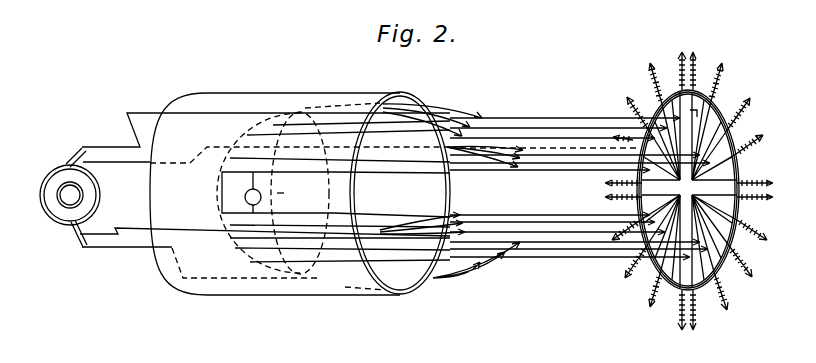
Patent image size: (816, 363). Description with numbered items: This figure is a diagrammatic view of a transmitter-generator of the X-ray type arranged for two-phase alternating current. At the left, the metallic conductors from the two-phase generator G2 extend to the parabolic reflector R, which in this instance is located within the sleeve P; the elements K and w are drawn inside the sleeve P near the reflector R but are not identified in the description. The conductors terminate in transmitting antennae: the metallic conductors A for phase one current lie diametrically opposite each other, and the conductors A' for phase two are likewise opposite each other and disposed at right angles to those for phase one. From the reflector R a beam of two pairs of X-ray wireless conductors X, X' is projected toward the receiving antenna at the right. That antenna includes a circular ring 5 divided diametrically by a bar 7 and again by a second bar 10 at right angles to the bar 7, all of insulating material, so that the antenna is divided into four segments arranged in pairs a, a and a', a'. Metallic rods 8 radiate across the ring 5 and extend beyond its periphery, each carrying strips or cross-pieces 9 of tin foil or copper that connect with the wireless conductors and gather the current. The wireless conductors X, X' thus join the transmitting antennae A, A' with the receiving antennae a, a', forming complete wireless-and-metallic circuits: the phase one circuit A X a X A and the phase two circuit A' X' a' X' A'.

The two-phase generator G2 is at (60, 195).
The sleeve P is at (240, 93).
The parabolic reflector R is at (218, 197).
The lamp holder K is at (277, 192).
The lamp filament w is at (288, 195).
The metallic conductors (transmitting antennae) for phase one current A is at (451, 197).
The metallic conductors (transmitting antennae) for phase two current A' is at (451, 190).
The wireless conductors (phase one) X is at (570, 192).
The wireless conductors (phase two) X' is at (552, 193).
The receiving antenna segments (phase one pair) a is at (689, 191).
The receiving antenna segments (phase two pair) a' is at (696, 193).
The circular ring 5 is at (745, 240).
The bar 7 is at (750, 168).
The metallic rods 8 is at (735, 138).
The strips or cross-pieces 9 is at (723, 82).
The second bar 10 is at (698, 112).